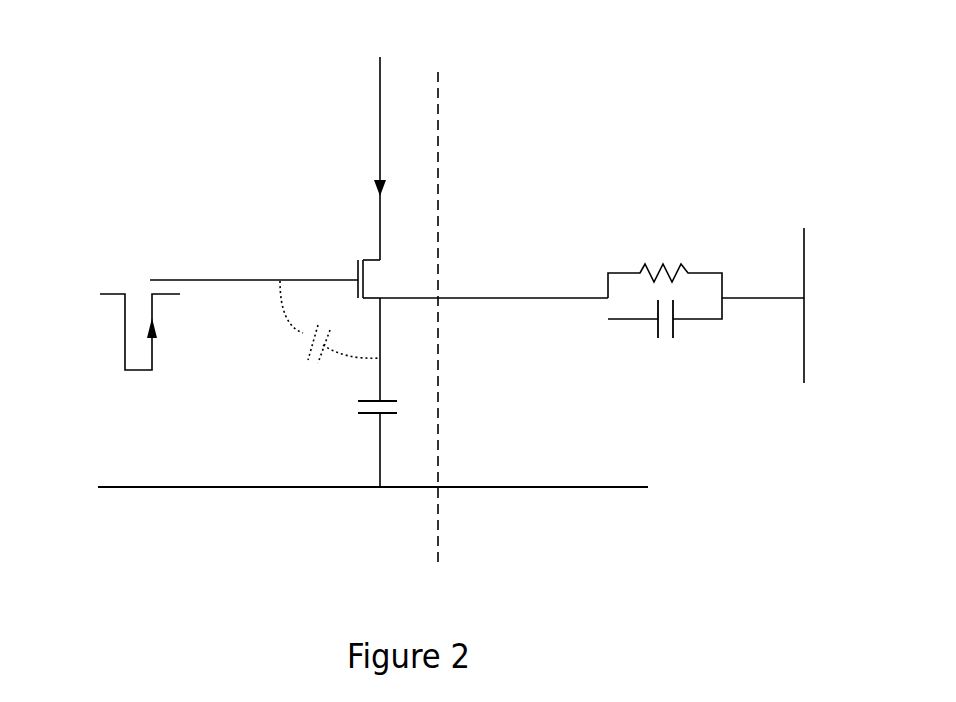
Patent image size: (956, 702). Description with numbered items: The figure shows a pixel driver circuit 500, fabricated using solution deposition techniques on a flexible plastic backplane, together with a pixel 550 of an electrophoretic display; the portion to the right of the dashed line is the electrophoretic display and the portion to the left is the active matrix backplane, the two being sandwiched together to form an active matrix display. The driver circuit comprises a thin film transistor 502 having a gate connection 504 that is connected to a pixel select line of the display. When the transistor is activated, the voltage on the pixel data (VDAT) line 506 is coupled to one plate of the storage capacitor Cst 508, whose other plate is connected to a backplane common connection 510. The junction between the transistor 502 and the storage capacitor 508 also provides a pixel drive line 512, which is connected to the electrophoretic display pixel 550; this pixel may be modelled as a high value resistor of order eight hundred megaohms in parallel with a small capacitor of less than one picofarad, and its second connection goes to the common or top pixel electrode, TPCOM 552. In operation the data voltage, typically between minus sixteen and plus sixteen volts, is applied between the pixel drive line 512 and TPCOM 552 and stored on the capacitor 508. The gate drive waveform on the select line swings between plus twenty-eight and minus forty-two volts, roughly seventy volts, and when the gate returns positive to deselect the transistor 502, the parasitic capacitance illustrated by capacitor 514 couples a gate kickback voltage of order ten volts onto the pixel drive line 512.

The pixel driver circuit 500 is at (177, 534).
The thin film transistor 502 is at (384, 265).
The gate connection 504 is at (302, 278).
The pixel data (VDAT) line 506 is at (377, 130).
The storage capacitor Cst 508 is at (370, 415).
The backplane common connection 510 is at (280, 485).
The pixel drive line 512 is at (480, 303).
The parasitic capacitance 514 is at (302, 352).
The electrophoretic display pixel 550 is at (655, 243).
The TPCOM (top pixel electrode) 552 is at (804, 228).